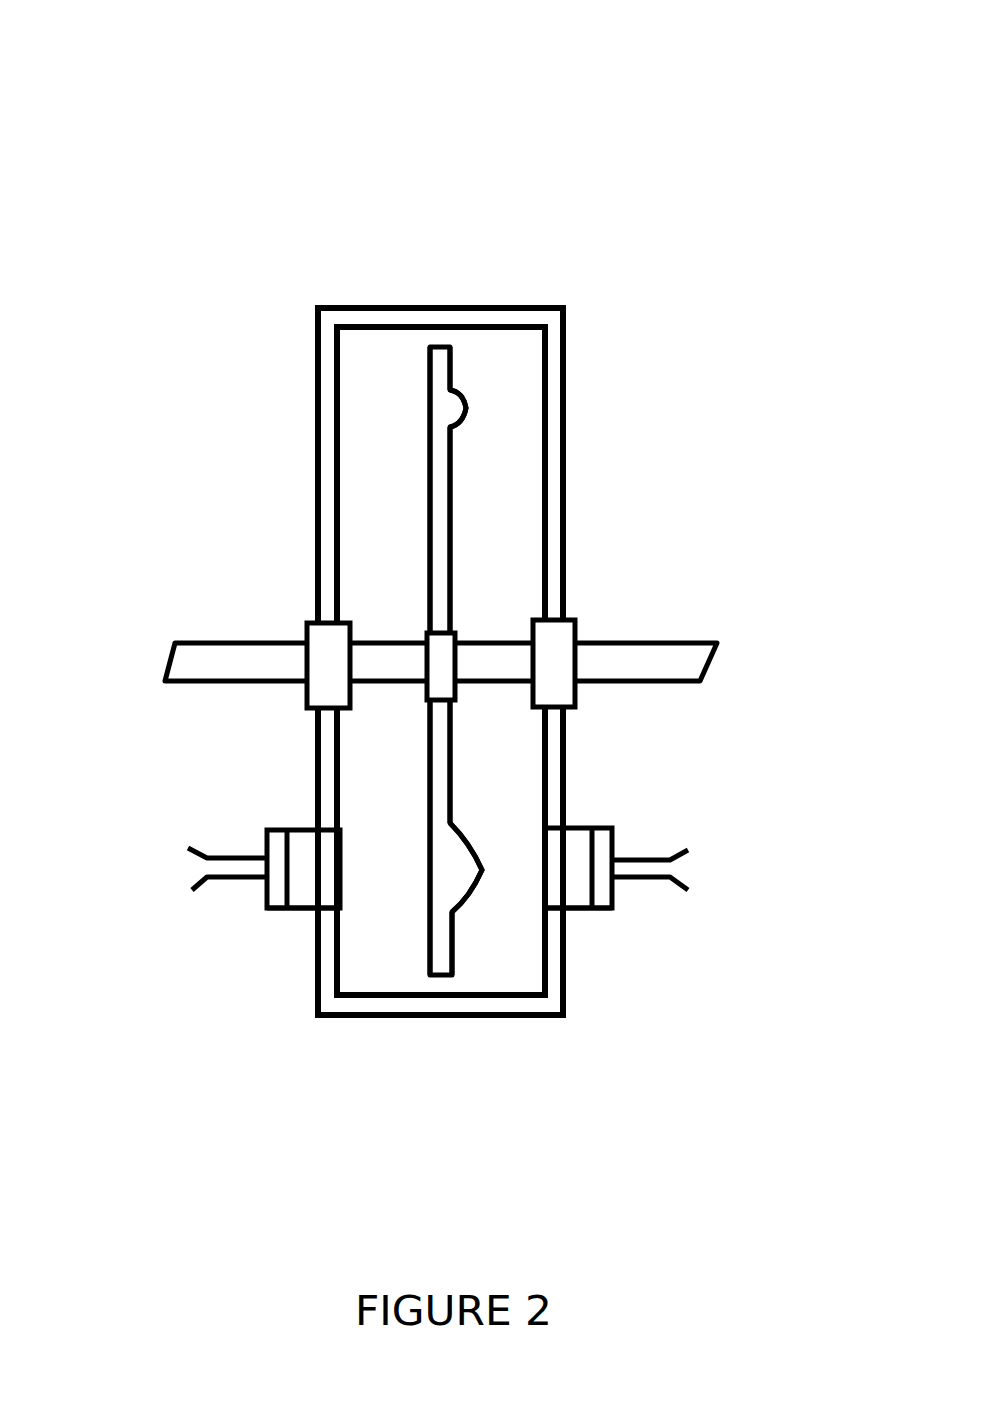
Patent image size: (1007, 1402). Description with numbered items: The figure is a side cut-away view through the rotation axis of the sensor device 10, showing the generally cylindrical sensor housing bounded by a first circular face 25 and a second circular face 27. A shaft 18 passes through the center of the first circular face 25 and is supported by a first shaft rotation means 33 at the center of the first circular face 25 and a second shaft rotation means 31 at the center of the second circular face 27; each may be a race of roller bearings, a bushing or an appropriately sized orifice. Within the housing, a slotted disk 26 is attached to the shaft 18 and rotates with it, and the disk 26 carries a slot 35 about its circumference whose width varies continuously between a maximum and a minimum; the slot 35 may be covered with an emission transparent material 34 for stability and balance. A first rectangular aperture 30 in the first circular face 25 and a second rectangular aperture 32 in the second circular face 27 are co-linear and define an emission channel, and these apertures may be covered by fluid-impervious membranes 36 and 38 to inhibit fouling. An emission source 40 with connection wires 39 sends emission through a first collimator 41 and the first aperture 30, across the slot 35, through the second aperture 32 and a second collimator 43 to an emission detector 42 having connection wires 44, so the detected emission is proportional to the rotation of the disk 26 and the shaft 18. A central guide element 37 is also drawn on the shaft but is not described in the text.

The sensor device 10 is at (197, 137).
The shaft 18 is at (657, 665).
The first circular face 25 is at (315, 492).
The slotted disk 26 is at (453, 568).
The second circular face 27 is at (565, 492).
The first rectangular aperture 30 is at (325, 860).
The second shaft rotation means 31 is at (580, 630).
The second rectangular aperture 32 is at (555, 867).
The first shaft rotation means 33 is at (305, 630).
The emission transparent fluid-impervious membrane 34 is at (428, 415).
The slot 35 is at (490, 651).
The first emission transparent fluid-impervious membrane 36 is at (340, 890).
The center guide block 37 is at (427, 633).
The second emission transparent fluid-impervious membrane 38 is at (547, 887).
The connection wires 39 is at (217, 858).
The emission source 40 is at (278, 893).
The first collimator 41 is at (300, 908).
The emission detector 42 is at (600, 877).
The second collimator 43 is at (583, 900).
The connection wires 44 is at (655, 858).